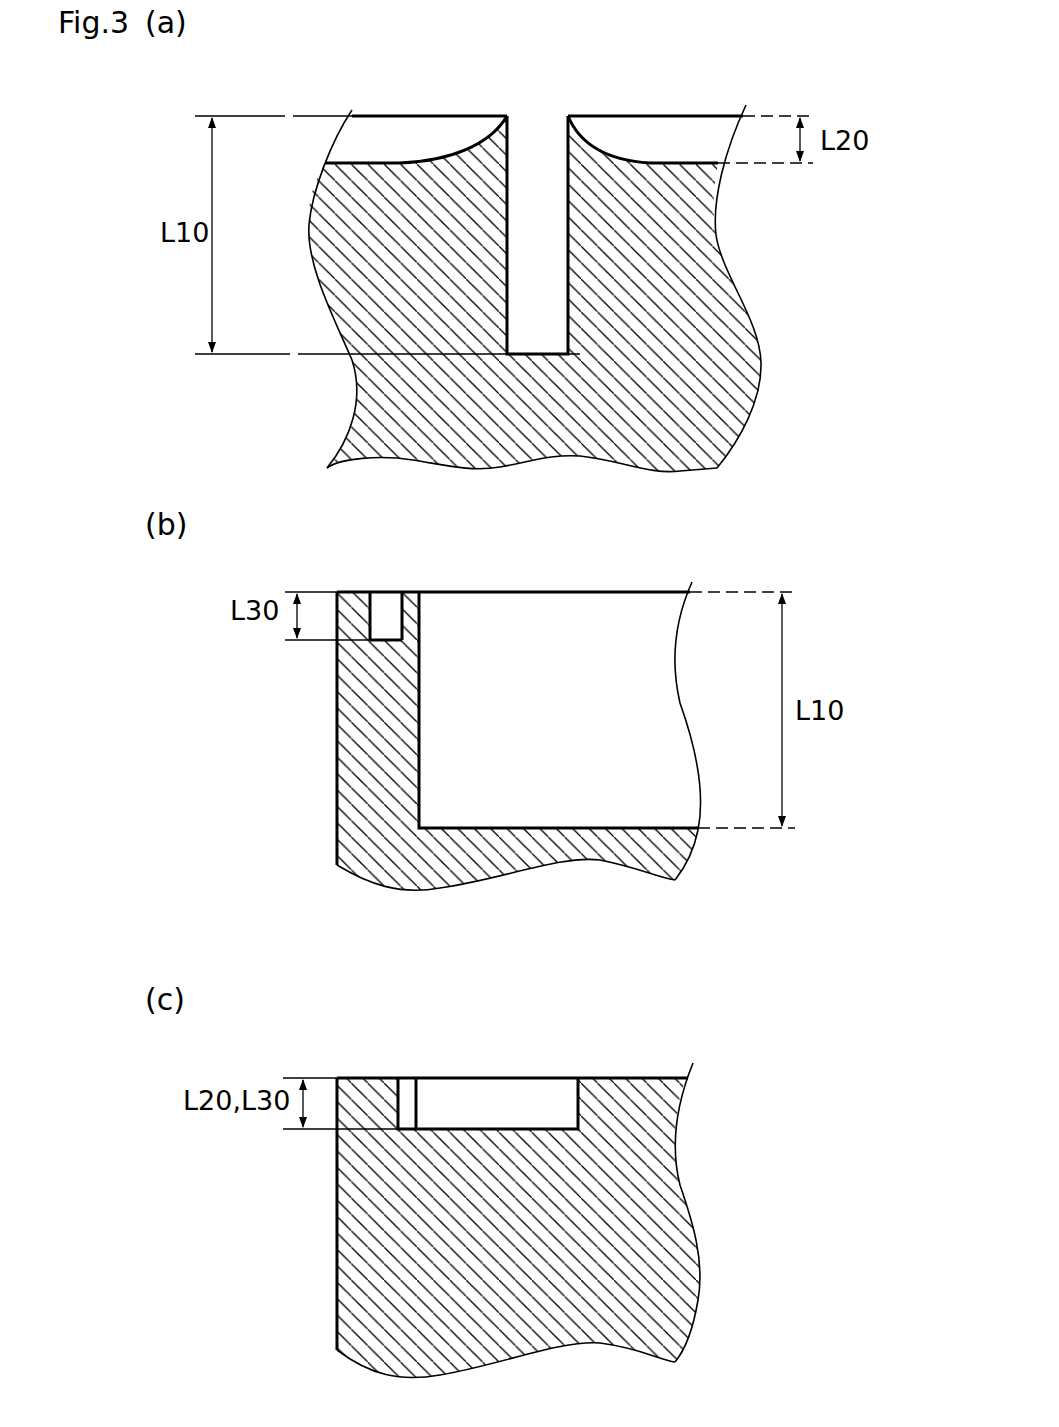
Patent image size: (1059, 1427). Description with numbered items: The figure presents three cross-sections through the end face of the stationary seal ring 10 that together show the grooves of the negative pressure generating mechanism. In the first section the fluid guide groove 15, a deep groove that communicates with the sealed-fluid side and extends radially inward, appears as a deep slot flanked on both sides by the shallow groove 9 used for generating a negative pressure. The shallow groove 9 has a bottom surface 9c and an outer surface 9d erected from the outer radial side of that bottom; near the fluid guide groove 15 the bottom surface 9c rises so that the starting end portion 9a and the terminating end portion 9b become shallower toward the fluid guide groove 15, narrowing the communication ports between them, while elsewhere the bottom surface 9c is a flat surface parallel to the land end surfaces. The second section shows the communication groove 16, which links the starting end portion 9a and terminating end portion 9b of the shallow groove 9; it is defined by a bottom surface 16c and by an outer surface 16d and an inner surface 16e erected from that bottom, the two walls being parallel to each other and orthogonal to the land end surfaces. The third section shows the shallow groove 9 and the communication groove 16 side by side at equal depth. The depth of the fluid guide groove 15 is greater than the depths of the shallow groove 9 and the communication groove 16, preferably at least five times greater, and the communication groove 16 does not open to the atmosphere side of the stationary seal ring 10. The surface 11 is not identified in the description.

The shallow groove 9 is at (555, 568).
The starting end portion 9a is at (474, 136).
The terminating end portion 9b is at (585, 130).
The bottom surface 9c is at (700, 163).
The outer surface 9d is at (670, 142).
The stationary seal ring 10 is at (725, 85).
The upper surface 11 is at (643, 112).
The fluid guide groove 15 is at (540, 250).
The communication groove 16 is at (392, 823).
The bottom surface 16c is at (395, 632).
The outer surface 16d is at (398, 610).
The inner surface 16e is at (365, 598).